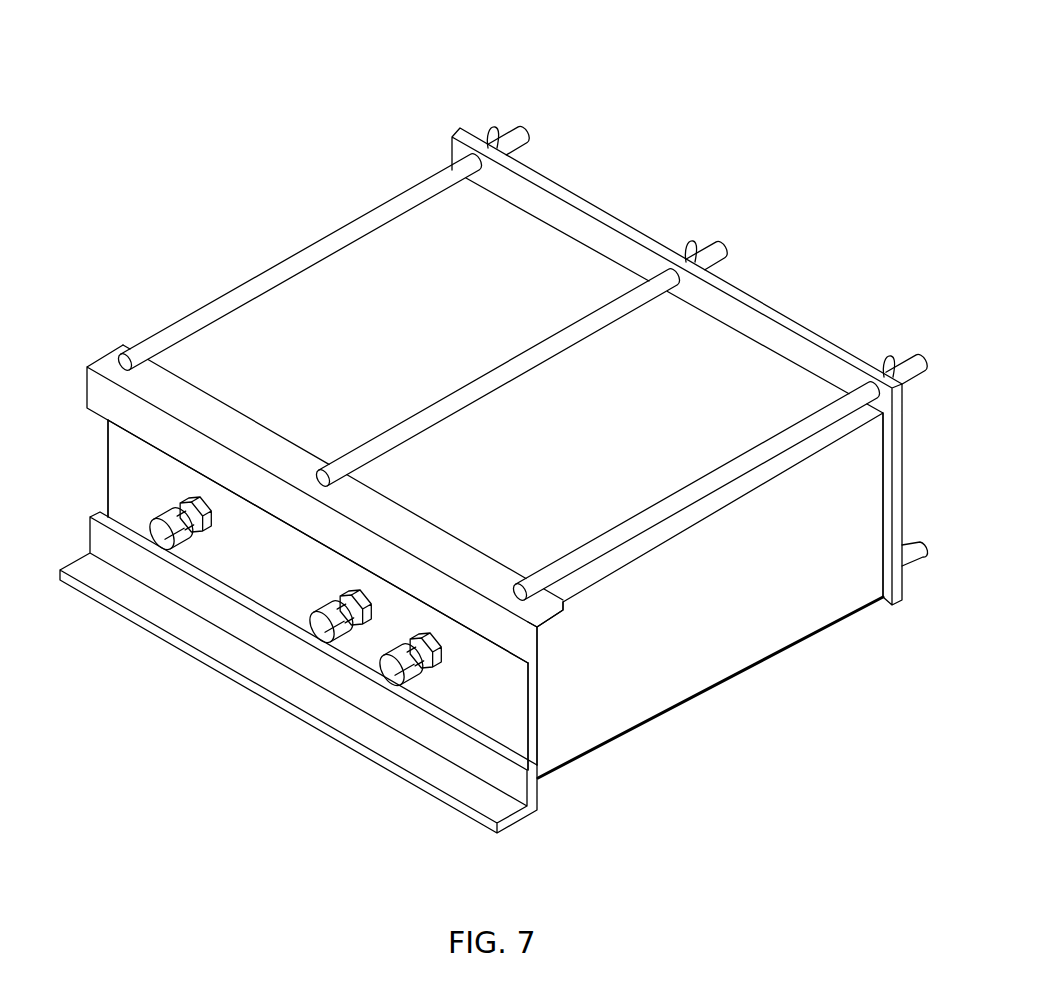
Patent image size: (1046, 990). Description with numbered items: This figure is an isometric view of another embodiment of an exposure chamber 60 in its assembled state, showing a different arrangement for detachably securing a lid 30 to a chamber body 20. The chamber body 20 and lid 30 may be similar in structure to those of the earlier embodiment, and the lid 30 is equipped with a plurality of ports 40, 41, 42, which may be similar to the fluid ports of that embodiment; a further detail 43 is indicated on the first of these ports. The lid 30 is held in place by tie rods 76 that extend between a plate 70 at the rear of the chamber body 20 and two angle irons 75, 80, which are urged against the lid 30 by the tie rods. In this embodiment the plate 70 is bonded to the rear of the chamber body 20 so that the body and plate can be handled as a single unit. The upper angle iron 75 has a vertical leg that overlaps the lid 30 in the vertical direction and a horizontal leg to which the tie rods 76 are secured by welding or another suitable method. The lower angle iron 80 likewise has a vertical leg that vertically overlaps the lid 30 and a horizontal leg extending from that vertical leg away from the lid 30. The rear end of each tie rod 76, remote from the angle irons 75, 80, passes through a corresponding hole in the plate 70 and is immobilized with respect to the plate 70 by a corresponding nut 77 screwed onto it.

The chamber body 20 is at (718, 650).
The lid 30 is at (533, 730).
The port 40 is at (135, 578).
The port 41 is at (317, 587).
The port 42 is at (455, 676).
The bolt head 43 is at (169, 606).
The exposure chamber 60 is at (494, 358).
The plate 70 is at (771, 304).
The upper angle iron 75 is at (103, 357).
The tie rod 76 is at (278, 265).
The nut 77 is at (489, 126).
The lower angle iron 80 is at (518, 822).